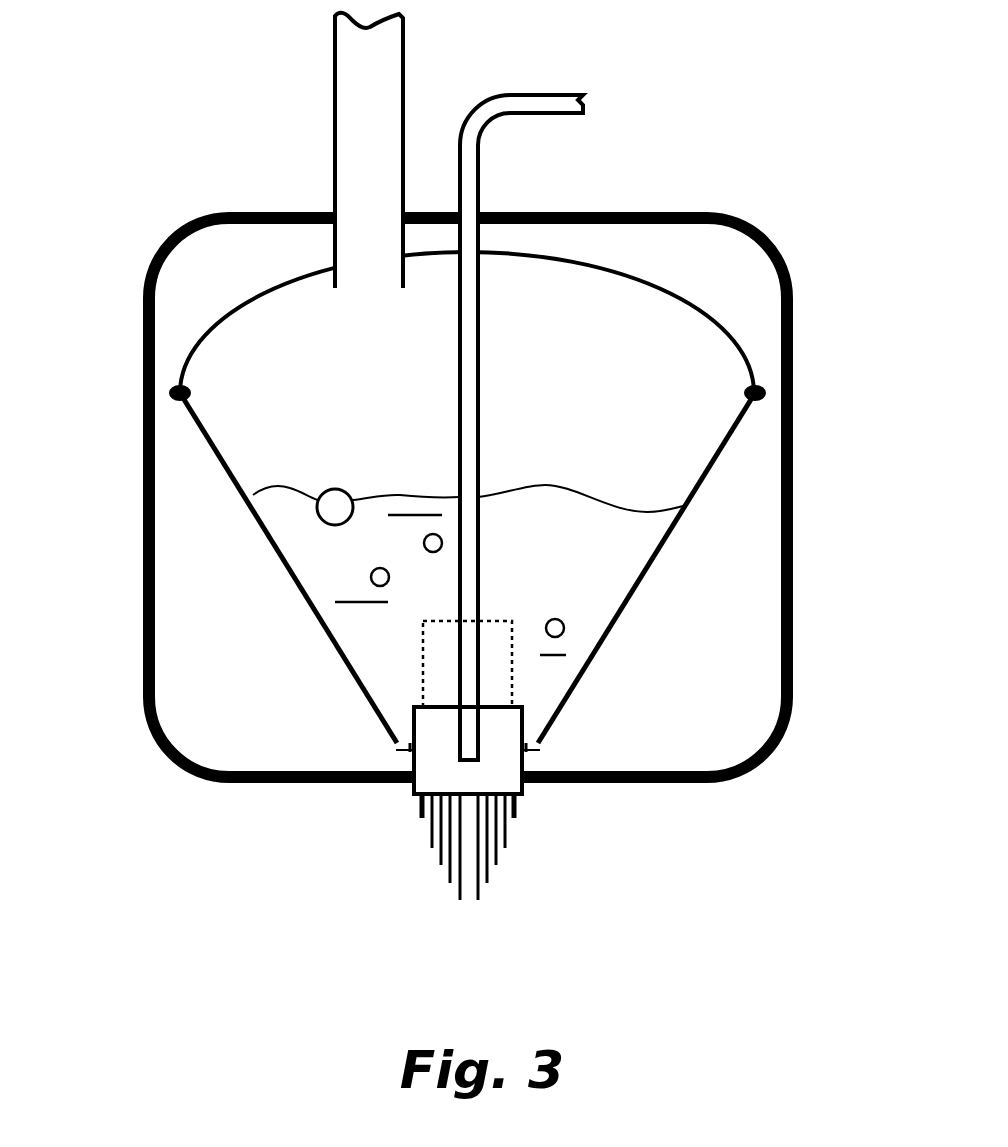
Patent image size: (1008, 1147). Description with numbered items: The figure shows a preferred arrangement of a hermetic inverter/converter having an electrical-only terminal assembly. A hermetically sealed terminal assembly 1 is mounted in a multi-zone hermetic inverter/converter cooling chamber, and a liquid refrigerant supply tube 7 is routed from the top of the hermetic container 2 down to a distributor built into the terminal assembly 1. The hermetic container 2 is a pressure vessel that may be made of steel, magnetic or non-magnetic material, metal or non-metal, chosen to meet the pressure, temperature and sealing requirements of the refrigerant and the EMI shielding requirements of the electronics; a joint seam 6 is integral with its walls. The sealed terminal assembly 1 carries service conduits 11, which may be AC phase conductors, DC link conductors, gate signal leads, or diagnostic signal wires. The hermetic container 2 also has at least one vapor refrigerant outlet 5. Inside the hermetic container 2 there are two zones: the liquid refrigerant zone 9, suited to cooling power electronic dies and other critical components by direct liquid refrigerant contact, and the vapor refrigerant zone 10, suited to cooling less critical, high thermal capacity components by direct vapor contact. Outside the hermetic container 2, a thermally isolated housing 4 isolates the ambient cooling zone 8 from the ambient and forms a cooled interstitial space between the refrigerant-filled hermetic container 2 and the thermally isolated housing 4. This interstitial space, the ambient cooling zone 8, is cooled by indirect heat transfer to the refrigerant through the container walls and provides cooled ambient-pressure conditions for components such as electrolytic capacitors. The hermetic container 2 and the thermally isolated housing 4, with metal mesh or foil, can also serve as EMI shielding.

The hermetically sealed terminal assembly 1 is at (437, 800).
The hermetic container 2 is at (258, 557).
The thermally isolated housing 4 is at (233, 257).
The vapor refrigerant outlet 5 is at (367, 183).
The joint seam 6 is at (760, 430).
The liquid refrigerant supply tube 7 is at (472, 203).
The ambient cooling zone 8 is at (712, 660).
The liquid refrigerant zone 9 is at (568, 605).
The vapor refrigerant zone 10 is at (333, 430).
The service conduits 11 is at (487, 870).